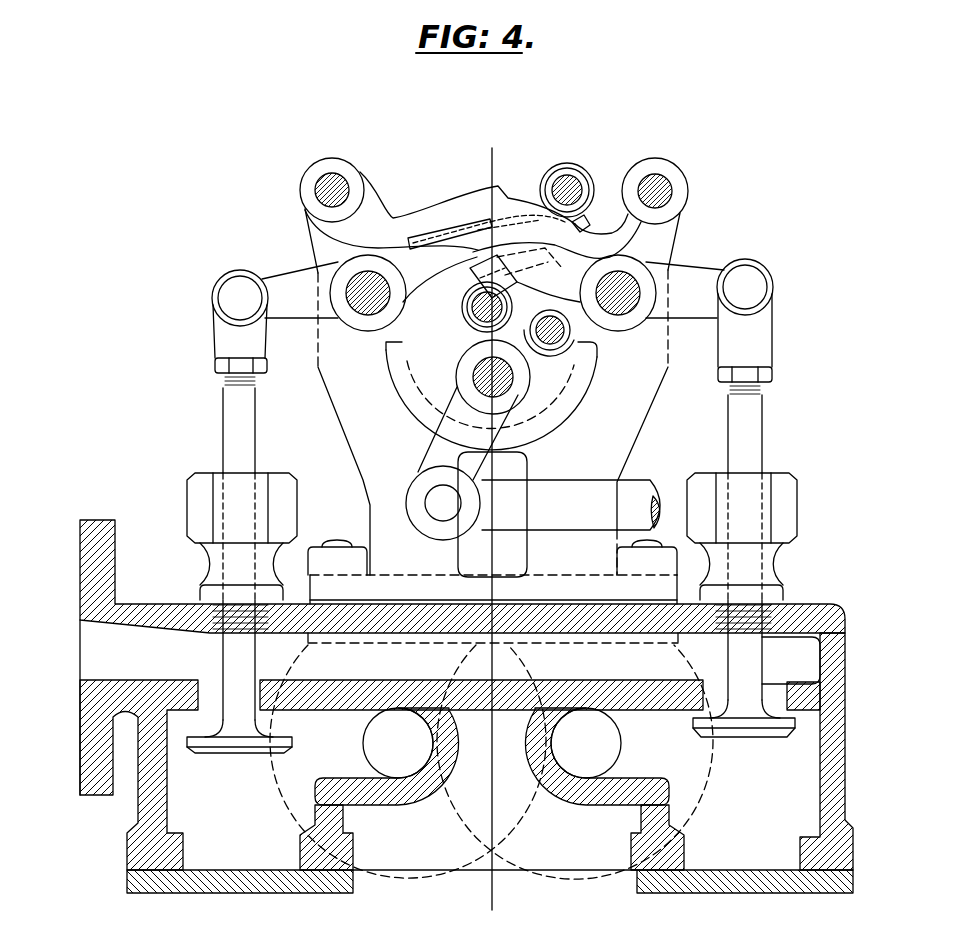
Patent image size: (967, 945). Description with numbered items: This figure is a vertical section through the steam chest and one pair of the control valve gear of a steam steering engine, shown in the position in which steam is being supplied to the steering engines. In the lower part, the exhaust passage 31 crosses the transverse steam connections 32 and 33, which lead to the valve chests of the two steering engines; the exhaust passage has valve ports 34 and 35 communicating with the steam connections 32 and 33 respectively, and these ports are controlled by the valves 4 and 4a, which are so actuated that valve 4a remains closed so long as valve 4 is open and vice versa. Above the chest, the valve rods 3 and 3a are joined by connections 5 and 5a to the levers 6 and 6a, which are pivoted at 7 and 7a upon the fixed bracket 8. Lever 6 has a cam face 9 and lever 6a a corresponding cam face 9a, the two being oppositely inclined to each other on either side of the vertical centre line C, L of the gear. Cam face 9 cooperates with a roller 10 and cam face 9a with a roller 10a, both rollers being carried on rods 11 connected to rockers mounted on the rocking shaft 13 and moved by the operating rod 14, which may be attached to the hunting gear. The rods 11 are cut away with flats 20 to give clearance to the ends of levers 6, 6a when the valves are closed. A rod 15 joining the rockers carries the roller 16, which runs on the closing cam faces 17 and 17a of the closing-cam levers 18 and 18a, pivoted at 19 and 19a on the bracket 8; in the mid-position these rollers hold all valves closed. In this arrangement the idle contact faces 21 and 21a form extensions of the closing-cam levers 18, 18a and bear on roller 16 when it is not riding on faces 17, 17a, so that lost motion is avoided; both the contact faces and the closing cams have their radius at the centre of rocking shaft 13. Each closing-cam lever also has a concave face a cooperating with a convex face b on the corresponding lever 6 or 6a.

The valve rod 3 is at (246, 425).
The valve rod 3a is at (750, 425).
The valve 4 is at (238, 746).
The valve 4a is at (750, 727).
The connection 5 is at (236, 300).
The connection 5a is at (750, 287).
The lever 6 is at (287, 290).
The lever 6a is at (690, 283).
The pivot 7 is at (362, 301).
The pivot 7a is at (621, 302).
The fixed bracket 8 is at (627, 435).
The cam face 9 is at (535, 270).
The cam face 9a is at (466, 297).
The roller 10 is at (470, 313).
The roller 10a is at (557, 323).
The rod 11 is at (466, 333).
The rocking shaft 13 is at (505, 385).
The operating rod 14 is at (571, 505).
The rod 15 is at (572, 192).
The roller 16 is at (567, 175).
The closing cam face 17 is at (443, 198).
The closing cam face 17a is at (512, 203).
The closing cam lever 18 is at (363, 220).
The closing cam lever 18a is at (636, 235).
The pivot 19 is at (333, 186).
The pivot 19a is at (658, 189).
The flat 20 is at (502, 297).
The idle contact face 21 is at (598, 228).
The idle contact face 21a is at (431, 222).
The exhaust passage 31 is at (90, 653).
The steam connection 32 is at (597, 756).
The steam connection 33 is at (387, 756).
The valve port 34 is at (208, 696).
The valve port 35 is at (766, 694).
The concave face a is at (592, 225).
The convex face b is at (478, 251).
The vertical centre line C is at (490, 516).
The vertical centre line L is at (490, 928).